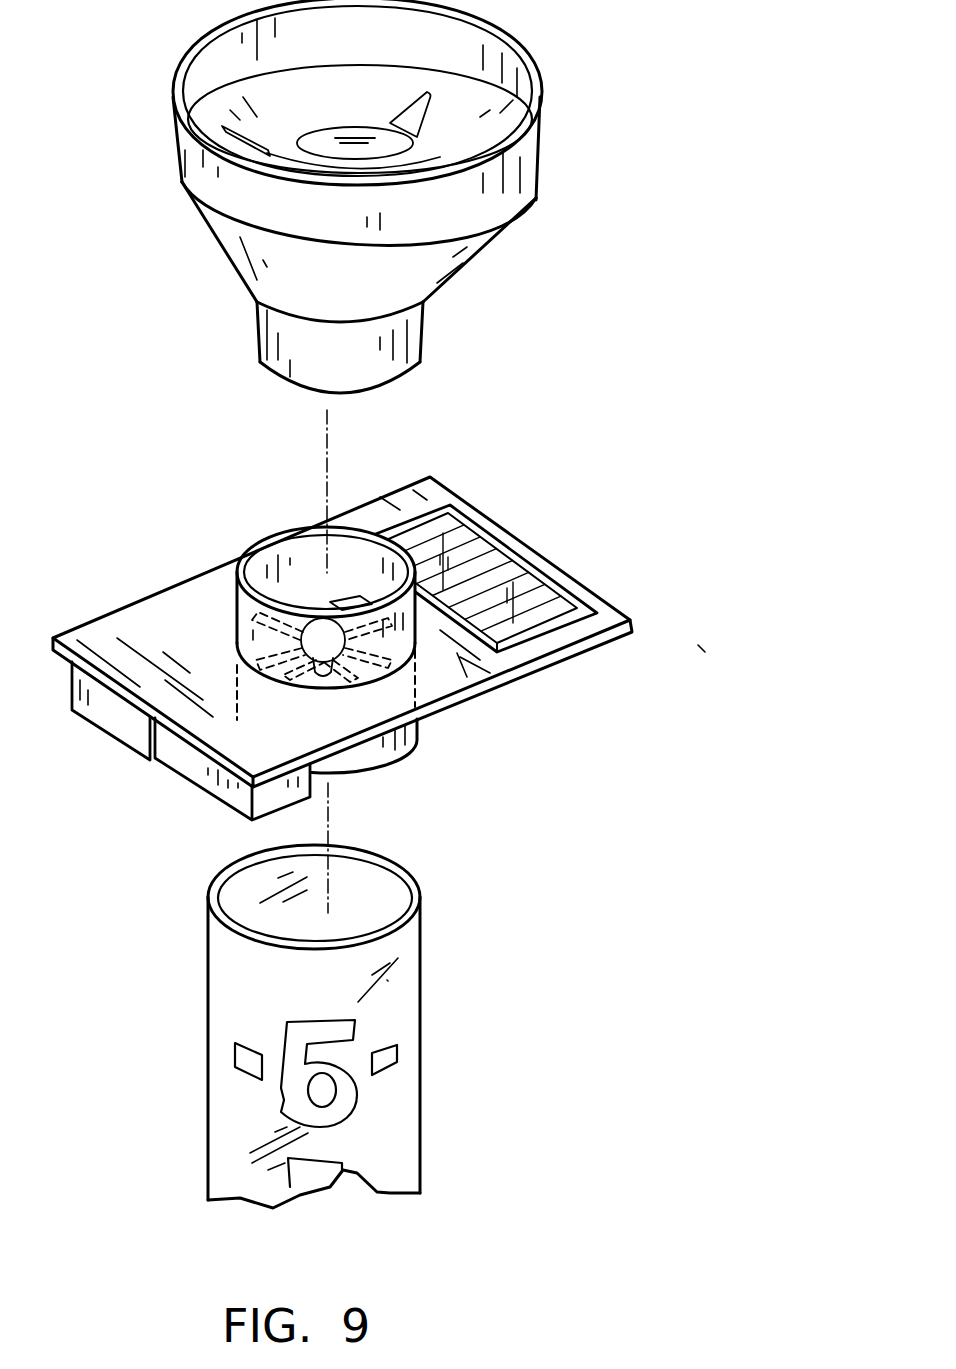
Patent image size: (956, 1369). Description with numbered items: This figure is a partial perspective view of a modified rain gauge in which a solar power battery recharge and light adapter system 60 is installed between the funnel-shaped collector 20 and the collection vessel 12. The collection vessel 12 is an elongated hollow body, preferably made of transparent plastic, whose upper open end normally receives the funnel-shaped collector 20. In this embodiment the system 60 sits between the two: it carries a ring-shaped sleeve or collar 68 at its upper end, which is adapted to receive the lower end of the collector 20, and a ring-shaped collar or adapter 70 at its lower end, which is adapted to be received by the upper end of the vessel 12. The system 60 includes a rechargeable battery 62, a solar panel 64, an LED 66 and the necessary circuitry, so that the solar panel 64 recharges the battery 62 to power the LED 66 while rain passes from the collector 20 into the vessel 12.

The collection vessel 12 is at (418, 990).
The funnel-shaped collector 20 is at (427, 303).
The solar power battery recharge and light adapter system 60 is at (553, 528).
The rechargeable battery 62 is at (197, 770).
The solar panel 64 is at (533, 607).
The LED 66 is at (367, 690).
The ring-shaped sleeve or collar 68 is at (233, 617).
The ring-shaped collar or adapter 70 is at (373, 757).